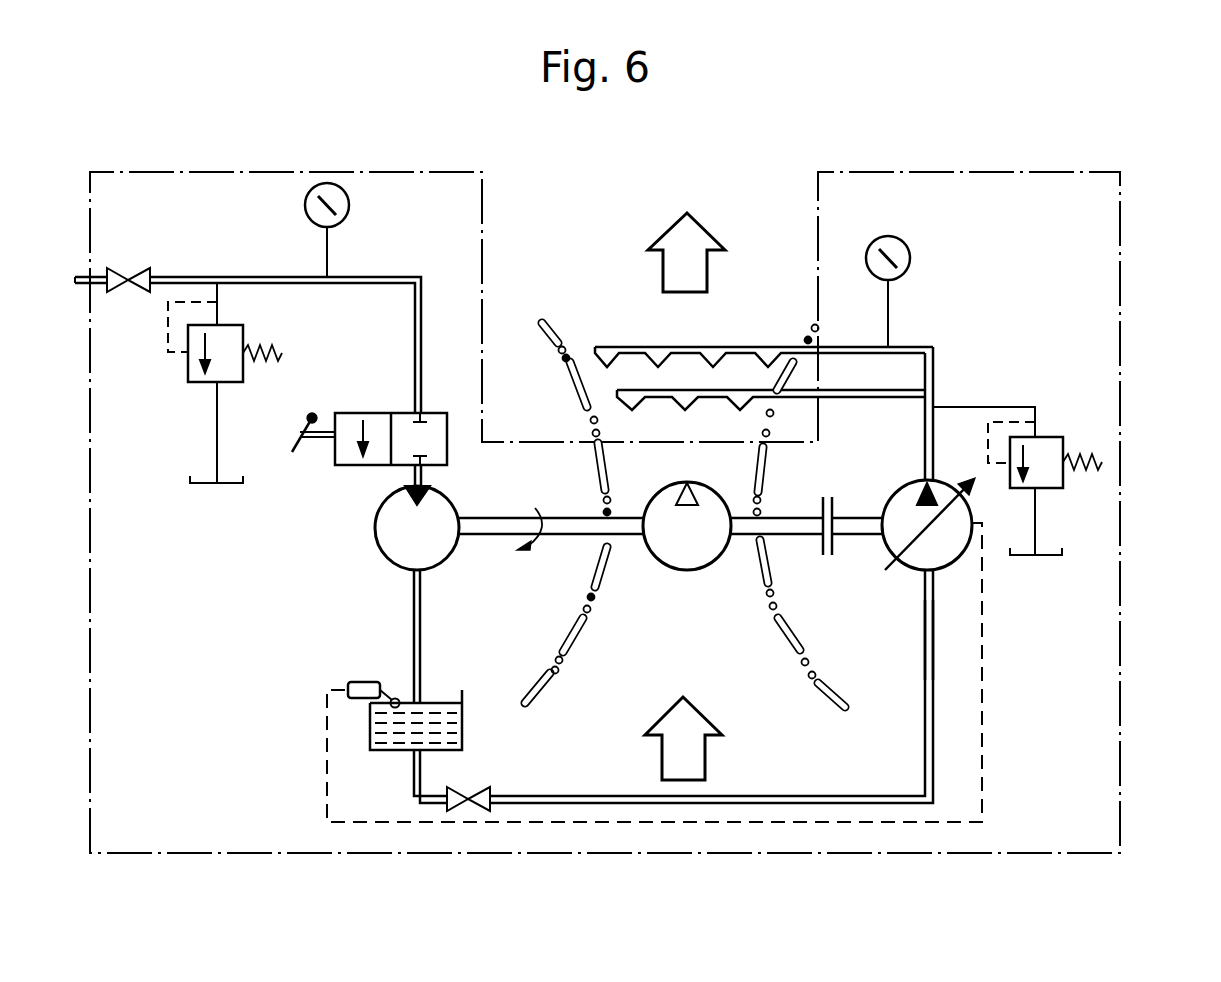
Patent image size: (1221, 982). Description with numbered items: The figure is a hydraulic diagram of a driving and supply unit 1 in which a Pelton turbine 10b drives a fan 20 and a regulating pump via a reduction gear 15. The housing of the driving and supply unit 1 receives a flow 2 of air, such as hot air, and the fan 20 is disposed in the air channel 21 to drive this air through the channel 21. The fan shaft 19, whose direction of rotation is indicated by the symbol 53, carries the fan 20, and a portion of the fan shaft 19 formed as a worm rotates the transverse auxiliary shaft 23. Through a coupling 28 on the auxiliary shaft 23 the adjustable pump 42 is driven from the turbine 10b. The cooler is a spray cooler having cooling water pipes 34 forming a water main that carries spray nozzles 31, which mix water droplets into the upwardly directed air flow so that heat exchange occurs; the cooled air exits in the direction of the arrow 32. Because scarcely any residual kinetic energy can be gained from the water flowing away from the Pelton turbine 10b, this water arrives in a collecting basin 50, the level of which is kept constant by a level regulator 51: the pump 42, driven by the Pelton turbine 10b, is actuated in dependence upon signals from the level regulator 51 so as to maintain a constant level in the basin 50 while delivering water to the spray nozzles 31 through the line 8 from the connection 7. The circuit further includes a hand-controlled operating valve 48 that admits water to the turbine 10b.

The driving and supply unit 1 is at (483, 262).
The flow of air 2 is at (690, 758).
The supply connection 7 is at (84, 278).
The return line 8 is at (924, 633).
The Pelton turbine 10b is at (351, 534).
The reduction gear 15 is at (391, 522).
The fan shaft 19 is at (585, 525).
The fan 20 is at (665, 548).
The air channel 21 is at (773, 575).
The auxiliary shaft 23 is at (775, 527).
The coupling 28 is at (829, 500).
The spray nozzles 31 is at (600, 356).
The arrow indicating direction of cooled air 32 is at (690, 237).
The cooling water pipes 34 is at (764, 398).
The adjustable pump 42 is at (953, 537).
The hand-controlled operating valve 48 is at (380, 420).
The collecting basin 50 is at (465, 703).
The level regulator 51 is at (348, 684).
The direction of rotation of shaft 53 is at (535, 518).